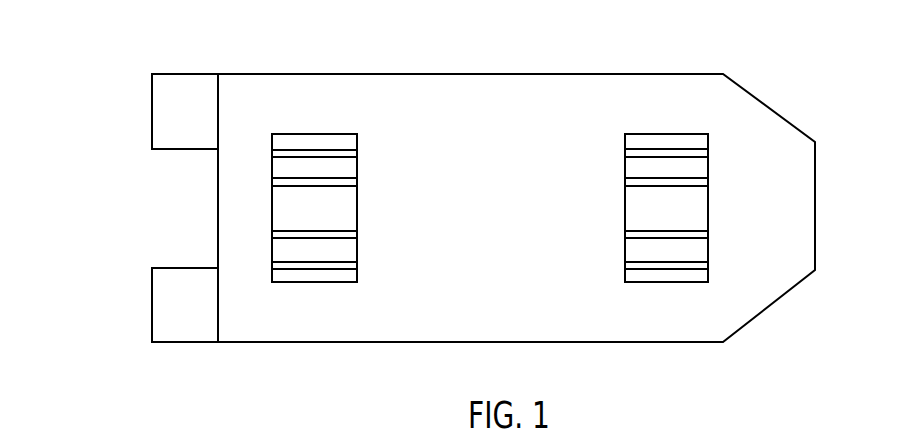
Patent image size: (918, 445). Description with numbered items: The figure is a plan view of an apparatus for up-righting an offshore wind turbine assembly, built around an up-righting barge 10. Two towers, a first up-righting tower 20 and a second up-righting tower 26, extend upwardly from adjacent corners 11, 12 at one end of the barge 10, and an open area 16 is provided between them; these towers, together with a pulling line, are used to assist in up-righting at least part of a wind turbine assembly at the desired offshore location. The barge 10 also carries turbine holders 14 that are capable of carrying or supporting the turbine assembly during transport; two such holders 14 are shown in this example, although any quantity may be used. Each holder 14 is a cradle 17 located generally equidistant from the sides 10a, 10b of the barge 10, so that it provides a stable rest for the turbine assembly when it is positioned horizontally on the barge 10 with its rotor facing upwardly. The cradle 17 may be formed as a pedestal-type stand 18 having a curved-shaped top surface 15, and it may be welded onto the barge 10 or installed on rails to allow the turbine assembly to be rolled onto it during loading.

The up-righting barge 10 is at (625, 72).
The side of the barge 10a is at (478, 45).
The side of the barge 10b is at (620, 353).
The corner of the barge 11 is at (222, 53).
The corner of the barge 12 is at (165, 366).
The turbine holder 14 is at (357, 165).
The curved-shaped top surface 15 is at (684, 218).
The open area 16 is at (197, 218).
The cradle 17 is at (357, 190).
The pedestal-type stand 18 is at (623, 217).
The first up-righting tower 20 is at (183, 74).
The second up-righting tower 26 is at (178, 343).